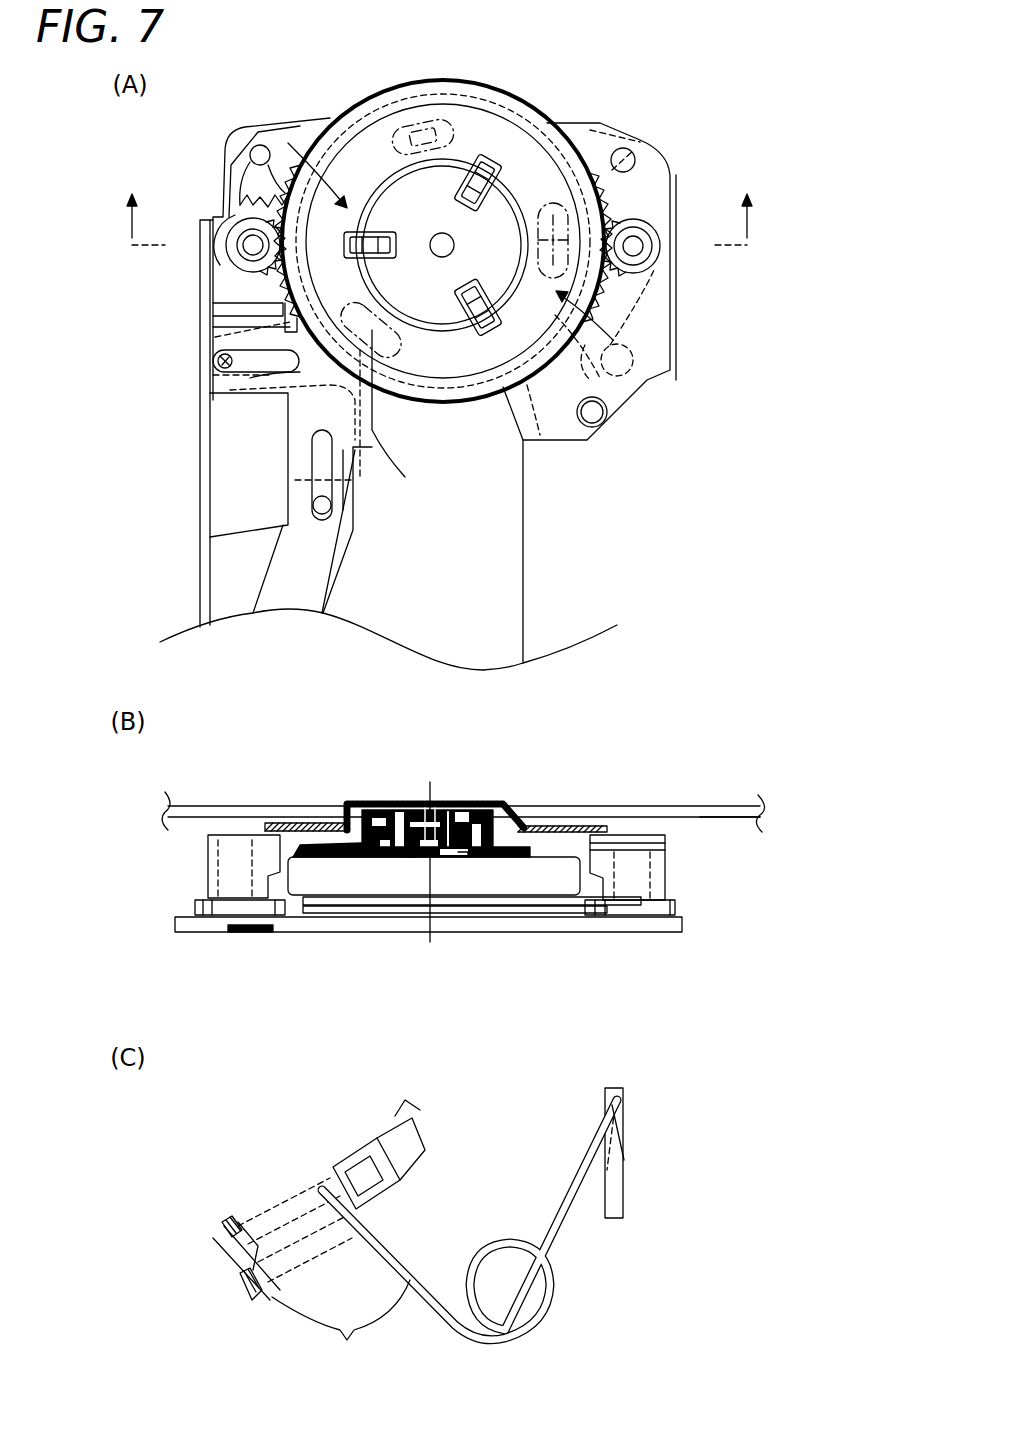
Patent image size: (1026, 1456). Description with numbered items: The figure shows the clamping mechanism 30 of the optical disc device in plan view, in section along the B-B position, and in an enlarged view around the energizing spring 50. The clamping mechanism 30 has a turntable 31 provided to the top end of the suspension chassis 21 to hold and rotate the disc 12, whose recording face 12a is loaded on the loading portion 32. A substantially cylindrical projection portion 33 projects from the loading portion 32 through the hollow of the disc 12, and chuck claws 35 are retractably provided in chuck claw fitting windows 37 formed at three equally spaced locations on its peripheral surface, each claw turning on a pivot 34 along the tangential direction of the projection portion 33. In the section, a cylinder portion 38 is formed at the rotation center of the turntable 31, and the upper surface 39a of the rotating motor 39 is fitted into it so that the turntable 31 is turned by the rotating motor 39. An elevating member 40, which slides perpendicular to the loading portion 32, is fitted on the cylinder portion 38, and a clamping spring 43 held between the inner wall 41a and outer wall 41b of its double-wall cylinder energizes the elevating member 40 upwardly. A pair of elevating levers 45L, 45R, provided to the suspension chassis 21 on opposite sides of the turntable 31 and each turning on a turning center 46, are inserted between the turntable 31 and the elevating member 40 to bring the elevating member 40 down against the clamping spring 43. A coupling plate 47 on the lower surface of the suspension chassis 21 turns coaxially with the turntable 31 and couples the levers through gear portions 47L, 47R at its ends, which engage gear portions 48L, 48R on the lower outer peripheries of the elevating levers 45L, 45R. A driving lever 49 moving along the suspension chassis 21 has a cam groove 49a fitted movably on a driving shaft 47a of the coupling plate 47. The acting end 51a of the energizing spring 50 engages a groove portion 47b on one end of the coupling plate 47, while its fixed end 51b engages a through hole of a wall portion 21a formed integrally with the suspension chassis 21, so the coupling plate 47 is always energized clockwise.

The disc 12 is at (716, 806).
The recording face 12a is at (722, 828).
The suspension chassis 21 is at (523, 565).
The wall portion 21a is at (610, 1100).
The clamping mechanism 30 is at (342, 88).
The turntable 31 is at (551, 108).
The loading portion 32 is at (560, 142).
The projection portion 33 is at (466, 190).
The pivot 34 is at (352, 812).
The chuck claws 35 is at (486, 226).
The chuck claw fitting windows 37 is at (395, 242).
The cylinder portion 38 is at (455, 810).
The rotating motor 39 is at (562, 880).
The upper surface 39a is at (432, 820).
The elevating member 40 is at (328, 855).
The inner wall 41a is at (512, 850).
The outer wall 41b is at (462, 850).
The clamping spring 43 is at (410, 855).
The elevating lever 45L is at (235, 218).
The elevating lever 45R is at (655, 268).
The turning center 46 is at (250, 247).
The coupling plate 47 is at (393, 98).
The gear portion 47L is at (225, 349).
The gear portion 47R is at (633, 138).
The driving shaft 47a is at (218, 362).
The groove portion 47b is at (527, 385).
The gear portion 48L is at (288, 195).
The gear portion 48R is at (600, 215).
The driving lever 49 is at (280, 590).
The cam groove 49a is at (250, 378).
The energizing spring 50 is at (640, 330).
The acting end 51a is at (614, 400).
The fixed end 51b is at (628, 1098).